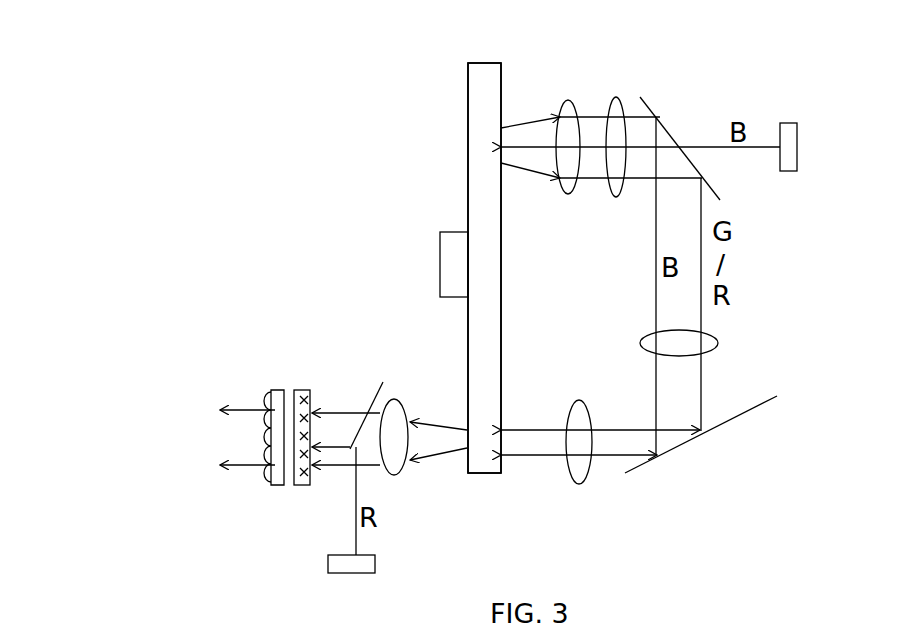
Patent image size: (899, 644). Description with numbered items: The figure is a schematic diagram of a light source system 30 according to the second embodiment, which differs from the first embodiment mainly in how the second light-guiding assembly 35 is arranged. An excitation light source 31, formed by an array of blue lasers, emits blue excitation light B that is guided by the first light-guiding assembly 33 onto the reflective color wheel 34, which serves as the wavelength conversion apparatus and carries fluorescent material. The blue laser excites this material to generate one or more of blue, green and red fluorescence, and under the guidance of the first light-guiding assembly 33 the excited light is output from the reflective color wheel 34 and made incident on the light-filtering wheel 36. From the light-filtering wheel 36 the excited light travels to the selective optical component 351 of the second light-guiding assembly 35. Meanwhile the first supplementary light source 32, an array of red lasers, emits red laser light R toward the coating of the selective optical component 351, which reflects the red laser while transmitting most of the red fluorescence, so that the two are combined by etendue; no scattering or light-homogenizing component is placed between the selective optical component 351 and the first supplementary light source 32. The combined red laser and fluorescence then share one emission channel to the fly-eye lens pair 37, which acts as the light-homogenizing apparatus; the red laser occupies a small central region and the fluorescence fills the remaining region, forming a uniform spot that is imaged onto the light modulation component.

The light source system 30 is at (470, 242).
The excitation light source 31 is at (801, 140).
The first supplementary light source 32 is at (377, 567).
The first light-guiding assembly 33 is at (667, 104).
The reflective color wheel 34 is at (503, 62).
The second light-guiding assembly 35 is at (368, 463).
The selective optical component 351 is at (360, 428).
The light-filtering wheel 36 is at (484, 268).
The fly-eye lens pair 37 is at (306, 388).